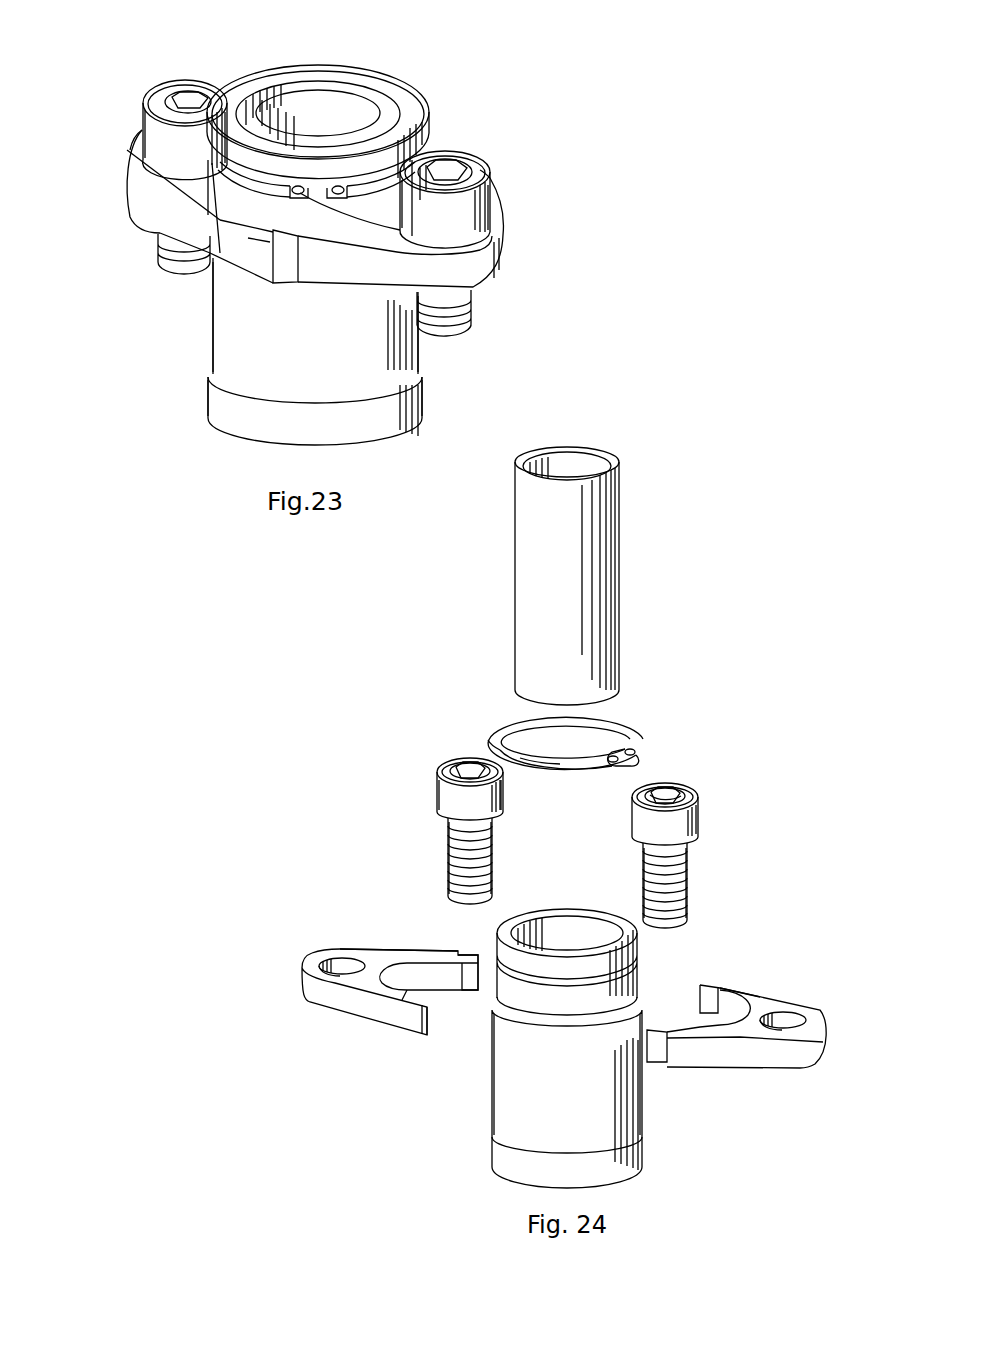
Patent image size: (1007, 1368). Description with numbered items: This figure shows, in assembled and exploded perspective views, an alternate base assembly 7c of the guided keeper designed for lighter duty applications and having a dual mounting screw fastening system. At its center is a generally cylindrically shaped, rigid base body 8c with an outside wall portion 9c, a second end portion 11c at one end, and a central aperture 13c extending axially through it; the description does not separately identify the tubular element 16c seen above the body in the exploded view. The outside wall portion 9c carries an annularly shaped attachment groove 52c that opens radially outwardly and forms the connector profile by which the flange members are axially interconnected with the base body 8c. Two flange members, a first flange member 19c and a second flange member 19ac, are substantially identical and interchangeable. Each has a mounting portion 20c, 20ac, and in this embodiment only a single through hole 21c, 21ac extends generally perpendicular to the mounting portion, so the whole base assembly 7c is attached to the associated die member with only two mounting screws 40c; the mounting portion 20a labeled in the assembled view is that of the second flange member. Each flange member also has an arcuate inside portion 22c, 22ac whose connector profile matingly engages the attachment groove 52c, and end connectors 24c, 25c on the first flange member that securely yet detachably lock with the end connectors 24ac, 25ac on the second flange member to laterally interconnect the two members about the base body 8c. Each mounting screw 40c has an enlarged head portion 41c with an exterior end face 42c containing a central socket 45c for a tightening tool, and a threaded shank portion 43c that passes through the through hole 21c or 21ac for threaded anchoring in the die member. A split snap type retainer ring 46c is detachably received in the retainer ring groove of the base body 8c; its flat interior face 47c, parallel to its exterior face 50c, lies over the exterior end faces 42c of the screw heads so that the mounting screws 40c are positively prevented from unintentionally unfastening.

In FIG. 23, the base assembly 7c is at (442, 80).
In FIG. 24, the base assembly 7c is at (673, 428).
In FIG. 23, the base body 8c is at (211, 342).
In FIG. 24, the base body 8c is at (491, 1122).
In FIG. 23, the outside wall portion 9c is at (230, 302).
In FIG. 24, the outside wall portion 9c is at (508, 1083).
In FIG. 23, the second end portion 11c is at (224, 426).
In FIG. 24, the second end portion 11c is at (500, 1176).
In FIG. 23, the central aperture 13c is at (296, 84).
In FIG. 24, the central aperture 13c is at (578, 928).
In FIG. 23, the tube 16c is at (355, 96).
In FIG. 24, the tube 16c is at (520, 545).
In FIG. 23, the first flange member 19c is at (128, 214).
In FIG. 24, the first flange member 19c is at (298, 1005).
In FIG. 23, the second flange member 19ac is at (510, 263).
In FIG. 24, the second flange member 19ac is at (746, 1026).
In FIG. 23, the mounting portion 20a is at (138, 172).
In FIG. 24, the mounting portion 20c is at (373, 957).
In FIG. 23, the mounting portion 20ac is at (498, 226).
In FIG. 24, the mounting portion 20ac is at (770, 1000).
In FIG. 24, the through hole 21c is at (340, 962).
In FIG. 24, the through hole 21ac is at (792, 1020).
In FIG. 24, the arcuate inside portion 22c is at (367, 987).
In FIG. 24, the arcuate inside wall portion 22ac is at (747, 990).
In FIG. 24, the first end connector 24c is at (477, 952).
In FIG. 24, the end connector 24ac is at (678, 1053).
In FIG. 23, the second end connector 25c is at (263, 260).
In FIG. 24, the second end connector 25c is at (414, 1030).
In FIG. 24, the end connector 25ac is at (708, 983).
In FIG. 23, the mounting screw 40c is at (172, 82).
In FIG. 24, the mounting screw 40c is at (433, 784).
In FIG. 23, the enlarged head portion 41c is at (152, 137).
In FIG. 24, the enlarged head portion 41c is at (445, 808).
In FIG. 23, the exterior end face 42c is at (188, 92).
In FIG. 24, the exterior end face 42c is at (456, 764).
In FIG. 23, the threaded shank portion 43c is at (470, 316).
In FIG. 24, the threaded shank portion 43c is at (447, 870).
In FIG. 24, the central socket 45c is at (678, 790).
In FIG. 23, the retainer ring 46c is at (300, 198).
In FIG. 24, the retainer ring 46c is at (636, 716).
In FIG. 24, the interior face 47c is at (552, 767).
In FIG. 24, the exterior face 50c is at (500, 722).
In FIG. 24, the attachment groove 52c is at (527, 1027).